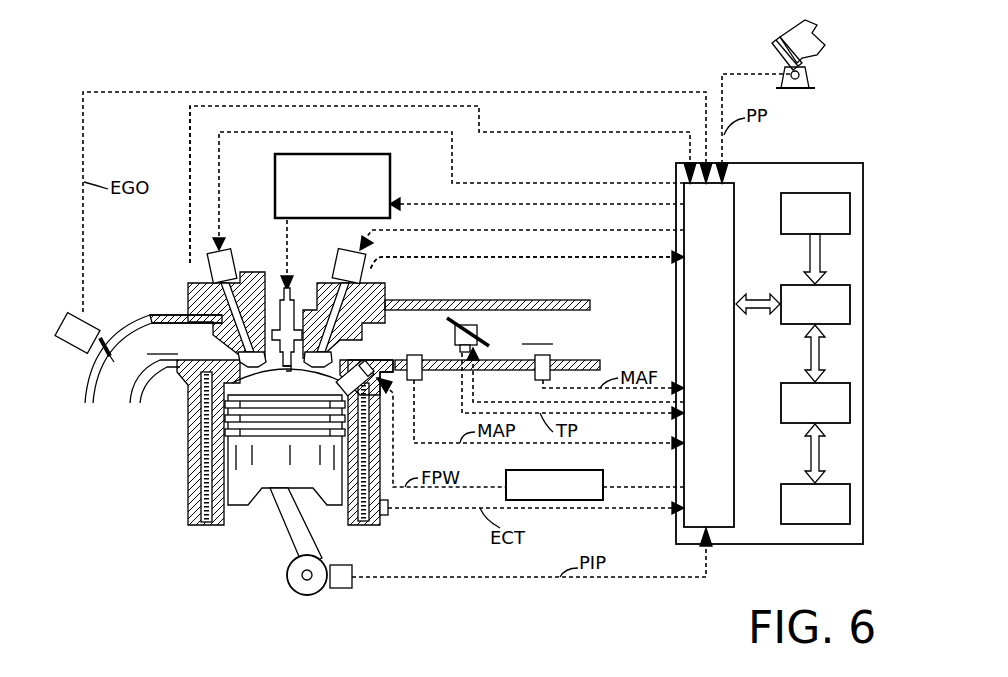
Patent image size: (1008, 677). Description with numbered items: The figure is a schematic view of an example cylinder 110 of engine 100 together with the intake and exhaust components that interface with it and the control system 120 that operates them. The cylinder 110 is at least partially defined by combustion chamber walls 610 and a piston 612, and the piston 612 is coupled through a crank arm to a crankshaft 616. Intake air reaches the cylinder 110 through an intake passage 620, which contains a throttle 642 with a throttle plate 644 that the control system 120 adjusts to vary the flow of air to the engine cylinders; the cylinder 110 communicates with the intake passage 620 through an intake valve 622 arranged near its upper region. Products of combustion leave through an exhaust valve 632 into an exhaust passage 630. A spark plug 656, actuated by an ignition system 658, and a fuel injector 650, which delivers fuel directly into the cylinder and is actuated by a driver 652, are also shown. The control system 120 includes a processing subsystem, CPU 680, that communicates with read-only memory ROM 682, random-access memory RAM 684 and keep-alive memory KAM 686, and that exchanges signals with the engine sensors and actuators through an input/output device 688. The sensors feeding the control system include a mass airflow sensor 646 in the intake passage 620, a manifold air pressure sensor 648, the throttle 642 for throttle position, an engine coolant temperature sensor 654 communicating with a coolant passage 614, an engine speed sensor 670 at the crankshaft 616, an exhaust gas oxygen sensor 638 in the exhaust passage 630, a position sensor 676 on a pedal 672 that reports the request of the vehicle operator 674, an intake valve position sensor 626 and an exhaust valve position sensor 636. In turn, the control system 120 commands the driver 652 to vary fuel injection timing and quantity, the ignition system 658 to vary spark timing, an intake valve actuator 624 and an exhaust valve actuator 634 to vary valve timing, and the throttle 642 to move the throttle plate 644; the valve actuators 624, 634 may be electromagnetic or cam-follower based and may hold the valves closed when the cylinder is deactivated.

The engine 100 is at (136, 472).
The cylinder 110 is at (190, 405).
The control system 120 is at (769, 342).
The combustion chamber walls 610 is at (275, 468).
The piston 612 is at (270, 478).
The coolant passage 614 is at (362, 527).
The crankshaft 616 is at (297, 592).
The intake passage 620 is at (492, 335).
The intake valve 622 is at (322, 340).
The intake valve actuator 624 is at (344, 252).
The intake valve position sensor 626 is at (378, 266).
The exhaust passage 630 is at (153, 359).
The exhaust valve 632 is at (222, 318).
The exhaust valve actuator 634 is at (242, 235).
The exhaust valve position sensor 636 is at (205, 262).
The exhaust gas oxygen sensor 638 is at (74, 355).
The throttle 642 is at (468, 325).
The throttle plate 644 is at (450, 318).
The mass airflow sensor 646 is at (538, 380).
The manifold air pressure sensor 648 is at (416, 400).
The fuel injector 650 is at (363, 372).
The driver 652 is at (605, 476).
The engine coolant temperature sensor 654 is at (388, 510).
The spark plug 656 is at (285, 308).
The ignition system 658 is at (390, 178).
The engine speed sensor 670 is at (345, 590).
The pedal 672 is at (776, 49).
The vehicle operator 674 is at (826, 40).
The pedal position sensor 676 is at (810, 82).
The processing subsystem (CPU) 680 is at (781, 285).
The read-only memory (ROM) 682 is at (781, 195).
The random-access memory (RAM) 684 is at (781, 383).
The keep-alive memory (KAM) 686 is at (781, 484).
The input/output device 688 is at (734, 490).